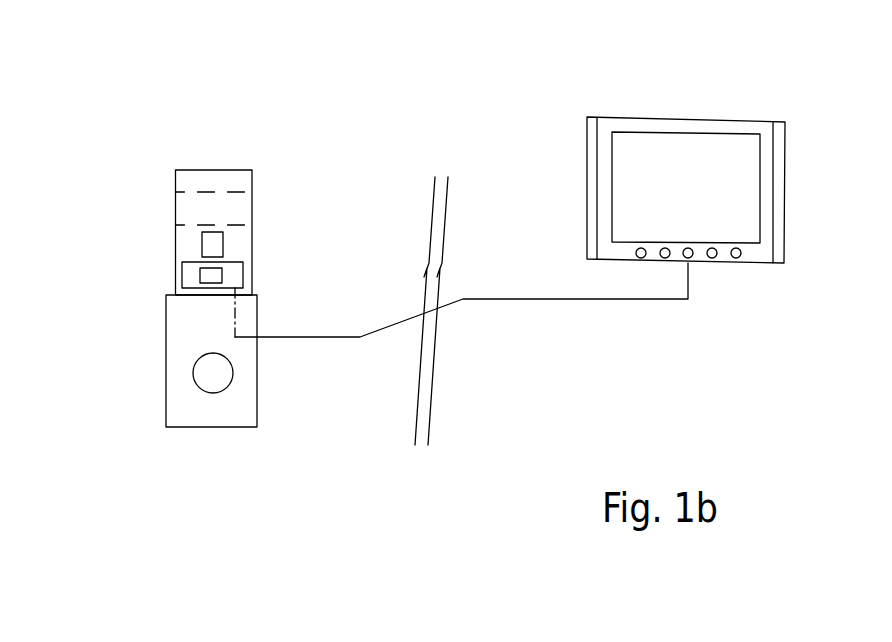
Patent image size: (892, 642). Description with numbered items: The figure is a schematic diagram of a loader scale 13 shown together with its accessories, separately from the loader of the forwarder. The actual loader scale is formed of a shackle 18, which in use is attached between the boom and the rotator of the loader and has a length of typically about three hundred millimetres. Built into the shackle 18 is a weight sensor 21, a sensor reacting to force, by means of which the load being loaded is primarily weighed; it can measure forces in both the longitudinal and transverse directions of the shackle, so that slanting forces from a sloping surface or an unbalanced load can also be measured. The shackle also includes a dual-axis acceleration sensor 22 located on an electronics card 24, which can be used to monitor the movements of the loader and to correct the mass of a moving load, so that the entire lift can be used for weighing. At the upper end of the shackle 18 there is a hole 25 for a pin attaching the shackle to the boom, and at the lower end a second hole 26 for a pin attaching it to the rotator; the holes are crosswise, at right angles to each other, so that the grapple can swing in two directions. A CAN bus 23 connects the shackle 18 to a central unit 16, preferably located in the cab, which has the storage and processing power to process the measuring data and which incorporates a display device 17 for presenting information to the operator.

The loader scale 13 is at (338, 163).
The central unit 16 is at (738, 127).
The display device 17 is at (672, 204).
The shackle 18 is at (180, 330).
The weight sensor 21 is at (213, 245).
The dual-axis acceleration sensor 22 is at (212, 273).
The CAN bus 23 is at (498, 300).
The electronics card 24 is at (232, 278).
The hole 25 is at (207, 193).
The second hole 26 is at (225, 358).